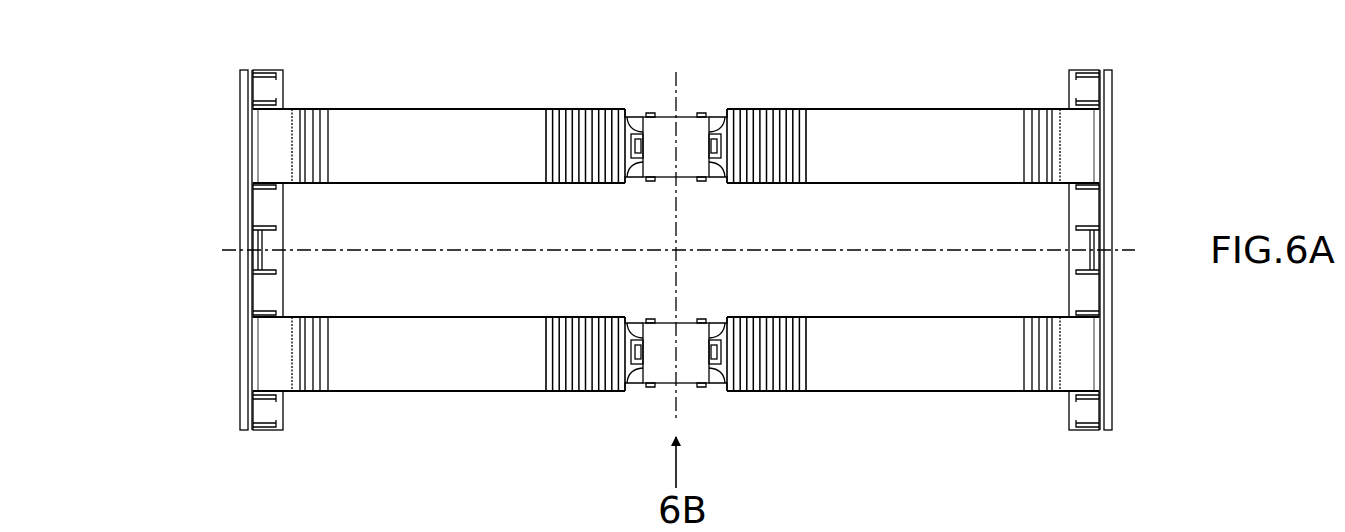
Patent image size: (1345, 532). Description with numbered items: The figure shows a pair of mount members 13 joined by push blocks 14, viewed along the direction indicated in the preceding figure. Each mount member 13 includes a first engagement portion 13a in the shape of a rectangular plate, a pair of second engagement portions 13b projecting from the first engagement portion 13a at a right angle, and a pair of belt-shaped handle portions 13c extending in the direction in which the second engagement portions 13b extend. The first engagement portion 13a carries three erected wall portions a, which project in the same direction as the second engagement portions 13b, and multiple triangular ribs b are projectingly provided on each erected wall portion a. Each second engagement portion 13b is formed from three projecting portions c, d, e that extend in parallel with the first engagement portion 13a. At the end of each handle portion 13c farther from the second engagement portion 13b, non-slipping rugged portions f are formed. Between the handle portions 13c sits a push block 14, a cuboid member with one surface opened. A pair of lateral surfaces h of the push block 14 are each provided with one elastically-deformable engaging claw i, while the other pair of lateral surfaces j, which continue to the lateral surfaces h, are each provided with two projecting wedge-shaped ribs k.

The mount member 13 is at (234, 147).
The first engagement portion 13a is at (252, 211).
The second engagement portion 13b is at (310, 117).
The handle portion 13c is at (458, 125).
The push block 14 is at (681, 114).
The erected wall portion a is at (265, 77).
The triangular rib b is at (266, 104).
The projecting portion c is at (300, 128).
The projecting portion d is at (312, 148).
The projecting portion e is at (323, 167).
The non-slipping rugged portion f is at (597, 113).
The lateral surface h is at (633, 118).
The engaging claw i is at (643, 149).
The lateral surface j is at (668, 116).
The wedge-shaped rib k is at (650, 113).